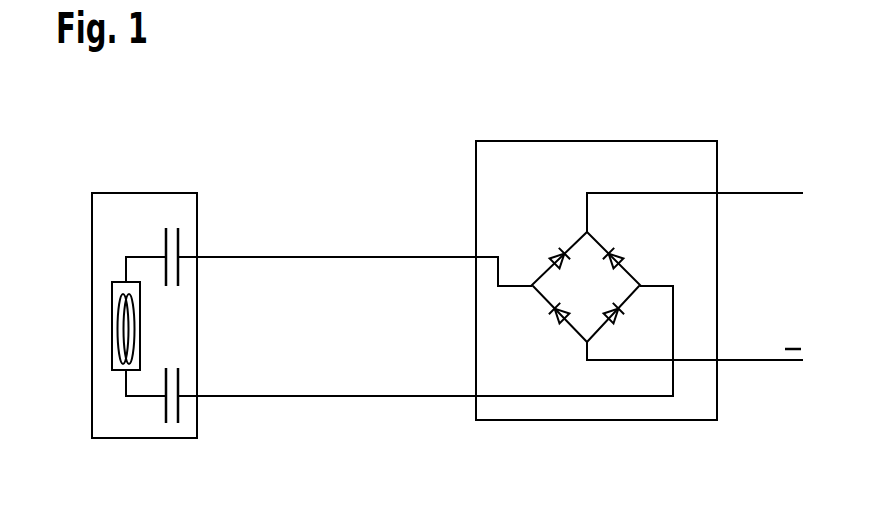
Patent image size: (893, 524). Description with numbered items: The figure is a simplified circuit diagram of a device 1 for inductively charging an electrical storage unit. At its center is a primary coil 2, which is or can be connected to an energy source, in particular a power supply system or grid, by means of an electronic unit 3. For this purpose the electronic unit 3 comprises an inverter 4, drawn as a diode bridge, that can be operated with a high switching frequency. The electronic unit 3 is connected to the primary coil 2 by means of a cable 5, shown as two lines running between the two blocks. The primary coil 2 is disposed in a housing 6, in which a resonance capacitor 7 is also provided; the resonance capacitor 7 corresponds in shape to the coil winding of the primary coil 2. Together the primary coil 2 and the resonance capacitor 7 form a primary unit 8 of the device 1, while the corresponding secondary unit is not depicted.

The device 1 is at (700, 100).
The primary coil 2 is at (112, 327).
The electronic unit 3 is at (570, 141).
The inverter 4 is at (640, 265).
The cable 5 is at (306, 257).
The housing 6 is at (159, 193).
The resonance capacitor 7 is at (183, 247).
The primary unit 8 is at (88, 378).